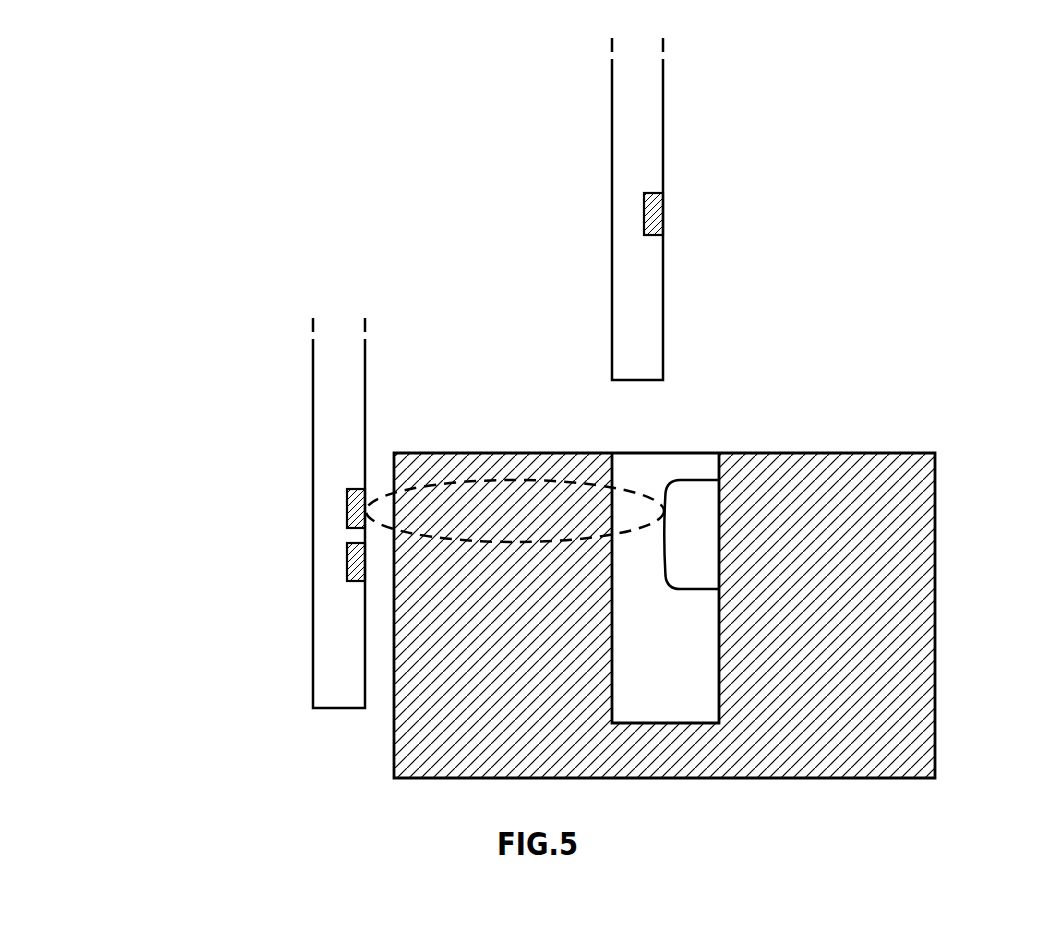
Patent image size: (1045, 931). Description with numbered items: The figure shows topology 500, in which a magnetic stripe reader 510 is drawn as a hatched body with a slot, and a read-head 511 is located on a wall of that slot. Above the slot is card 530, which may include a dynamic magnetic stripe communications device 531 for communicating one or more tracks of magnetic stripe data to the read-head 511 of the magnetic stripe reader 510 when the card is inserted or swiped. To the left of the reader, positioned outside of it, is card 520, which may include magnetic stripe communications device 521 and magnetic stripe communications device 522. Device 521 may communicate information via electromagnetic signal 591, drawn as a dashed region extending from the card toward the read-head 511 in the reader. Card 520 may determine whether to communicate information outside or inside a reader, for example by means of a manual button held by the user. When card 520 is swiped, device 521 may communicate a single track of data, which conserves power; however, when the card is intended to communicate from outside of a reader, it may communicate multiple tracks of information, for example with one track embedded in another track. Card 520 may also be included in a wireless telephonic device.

The topology 500 is at (544, 406).
The magnetic stripe reader 510 is at (785, 458).
The read-head 511 is at (698, 482).
The card 520 is at (313, 450).
The magnetic stripe communications device 521 is at (351, 507).
The magnetic stripe communications device 522 is at (351, 575).
The card 530 is at (617, 336).
The dynamic magnetic stripe communications device 531 is at (648, 197).
The electromagnetic signal 591 is at (574, 540).